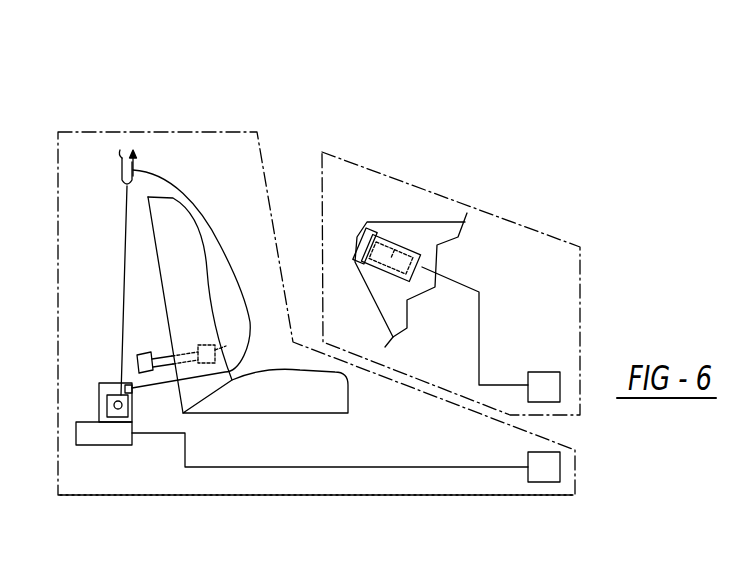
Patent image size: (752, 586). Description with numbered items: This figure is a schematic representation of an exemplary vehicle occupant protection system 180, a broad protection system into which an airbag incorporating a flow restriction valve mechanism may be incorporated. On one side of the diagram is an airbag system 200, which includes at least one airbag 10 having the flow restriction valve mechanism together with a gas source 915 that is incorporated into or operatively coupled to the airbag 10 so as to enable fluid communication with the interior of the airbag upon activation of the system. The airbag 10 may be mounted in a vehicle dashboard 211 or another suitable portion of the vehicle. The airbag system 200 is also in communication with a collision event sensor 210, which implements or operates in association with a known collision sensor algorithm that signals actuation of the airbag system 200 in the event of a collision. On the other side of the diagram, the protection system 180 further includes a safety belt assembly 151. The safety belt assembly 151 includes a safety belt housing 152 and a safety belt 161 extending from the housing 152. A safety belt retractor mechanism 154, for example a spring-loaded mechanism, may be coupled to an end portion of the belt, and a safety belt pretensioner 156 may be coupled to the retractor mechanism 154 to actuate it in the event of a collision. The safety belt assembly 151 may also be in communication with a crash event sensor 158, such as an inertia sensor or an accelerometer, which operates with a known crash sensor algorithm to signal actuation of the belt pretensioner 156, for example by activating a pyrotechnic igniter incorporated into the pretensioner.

The vehicle occupant protection system 180 is at (224, 81).
The safety belt 161 is at (168, 180).
The safety belt retractor mechanism 154 is at (100, 383).
The safety belt housing 152 is at (107, 405).
The safety belt pretensioner 156 is at (106, 435).
The safety belt assembly 151 is at (280, 500).
The crash event sensor 158 is at (540, 482).
The airbag 10 is at (362, 243).
The vehicle dashboard 211 is at (400, 218).
The gas source 915 is at (398, 253).
The airbag system 200 is at (556, 235).
The collision event sensor 210 is at (544, 373).